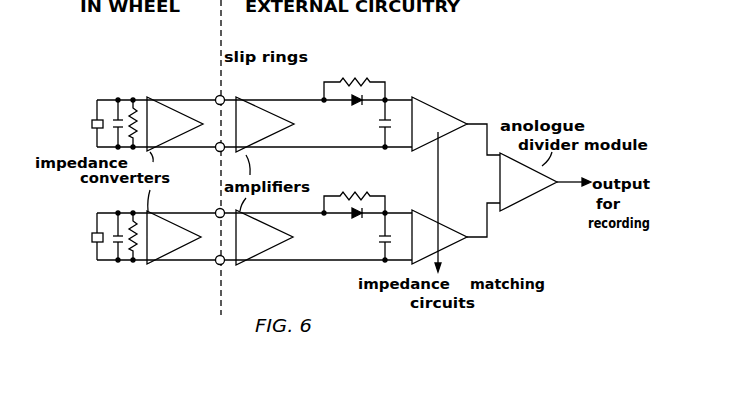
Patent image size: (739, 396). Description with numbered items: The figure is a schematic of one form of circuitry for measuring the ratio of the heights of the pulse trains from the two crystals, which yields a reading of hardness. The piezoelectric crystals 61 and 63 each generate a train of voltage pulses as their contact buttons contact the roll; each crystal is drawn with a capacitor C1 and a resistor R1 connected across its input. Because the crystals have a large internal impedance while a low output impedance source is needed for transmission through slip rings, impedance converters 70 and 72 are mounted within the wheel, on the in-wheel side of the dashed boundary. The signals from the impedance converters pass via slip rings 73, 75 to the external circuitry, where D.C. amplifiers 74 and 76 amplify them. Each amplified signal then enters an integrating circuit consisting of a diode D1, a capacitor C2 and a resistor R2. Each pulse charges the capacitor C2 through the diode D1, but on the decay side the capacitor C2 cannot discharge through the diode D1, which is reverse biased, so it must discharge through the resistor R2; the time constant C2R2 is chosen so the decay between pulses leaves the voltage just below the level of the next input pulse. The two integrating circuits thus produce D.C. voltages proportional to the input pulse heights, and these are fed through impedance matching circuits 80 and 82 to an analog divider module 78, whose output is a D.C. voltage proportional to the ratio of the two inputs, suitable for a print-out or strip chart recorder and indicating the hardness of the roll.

The piezoelectric crystal 61 is at (91, 237).
The piezoelectric crystal 63 is at (91, 124).
The impedance converter 70 is at (151, 265).
The impedance converter 72 is at (150, 98).
The slip rings 73 is at (217, 210).
The D.C. amplifier 74 is at (247, 265).
The slip rings 75 is at (216, 97).
The D.C. amplifier 76 is at (246, 104).
The analog divider module 78 is at (527, 199).
The impedance matching circuit 80 is at (447, 226).
The impedance matching circuit 82 is at (436, 106).
The capacitor C1 is at (114, 118).
The resistor R1 is at (133, 107).
The resistor R2 is at (361, 80).
The diode D1 is at (341, 241).
The capacitor C2 is at (388, 230).